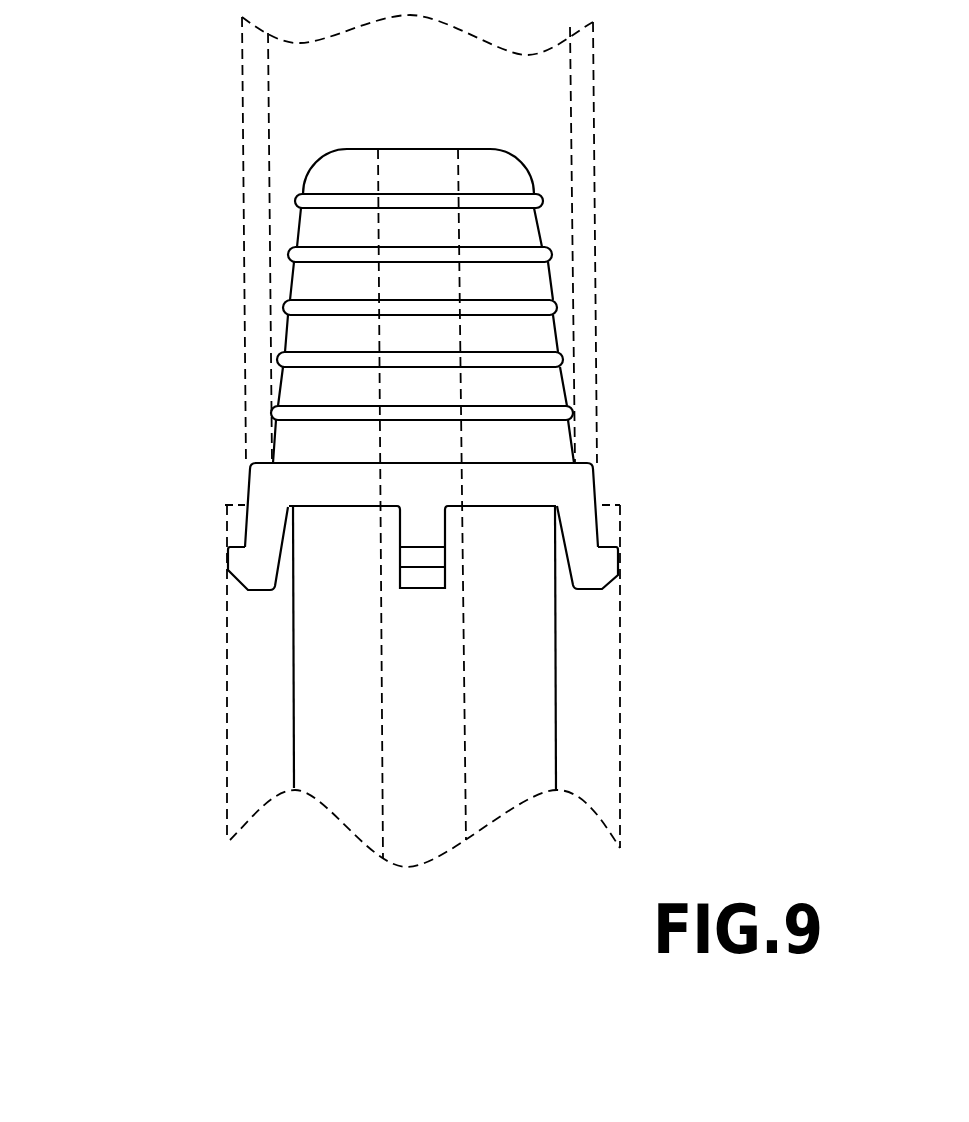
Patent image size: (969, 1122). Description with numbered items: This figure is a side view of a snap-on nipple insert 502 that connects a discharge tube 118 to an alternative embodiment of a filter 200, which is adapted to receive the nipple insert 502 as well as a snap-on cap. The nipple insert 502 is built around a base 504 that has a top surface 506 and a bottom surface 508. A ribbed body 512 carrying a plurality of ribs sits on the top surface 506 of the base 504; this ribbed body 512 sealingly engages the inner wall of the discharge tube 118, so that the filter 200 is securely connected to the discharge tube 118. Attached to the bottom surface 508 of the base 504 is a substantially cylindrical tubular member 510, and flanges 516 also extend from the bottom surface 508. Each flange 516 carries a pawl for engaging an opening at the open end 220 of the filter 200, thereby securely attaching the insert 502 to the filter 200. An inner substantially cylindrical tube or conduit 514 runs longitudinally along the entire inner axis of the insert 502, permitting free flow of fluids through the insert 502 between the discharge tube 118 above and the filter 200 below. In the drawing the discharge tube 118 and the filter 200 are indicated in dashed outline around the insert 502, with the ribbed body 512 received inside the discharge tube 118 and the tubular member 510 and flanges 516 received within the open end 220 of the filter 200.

The discharge tube 118 is at (240, 120).
The filter 200 is at (227, 745).
The open end 220 is at (225, 505).
The nipple insert 502 is at (185, 296).
The base 504 is at (540, 487).
The top surface 506 is at (498, 462).
The bottom surface 508 is at (348, 507).
The tubular member 510 is at (555, 667).
The ribbed body 512 is at (493, 195).
The conduit 514 is at (432, 228).
The flanges 516 is at (258, 565).